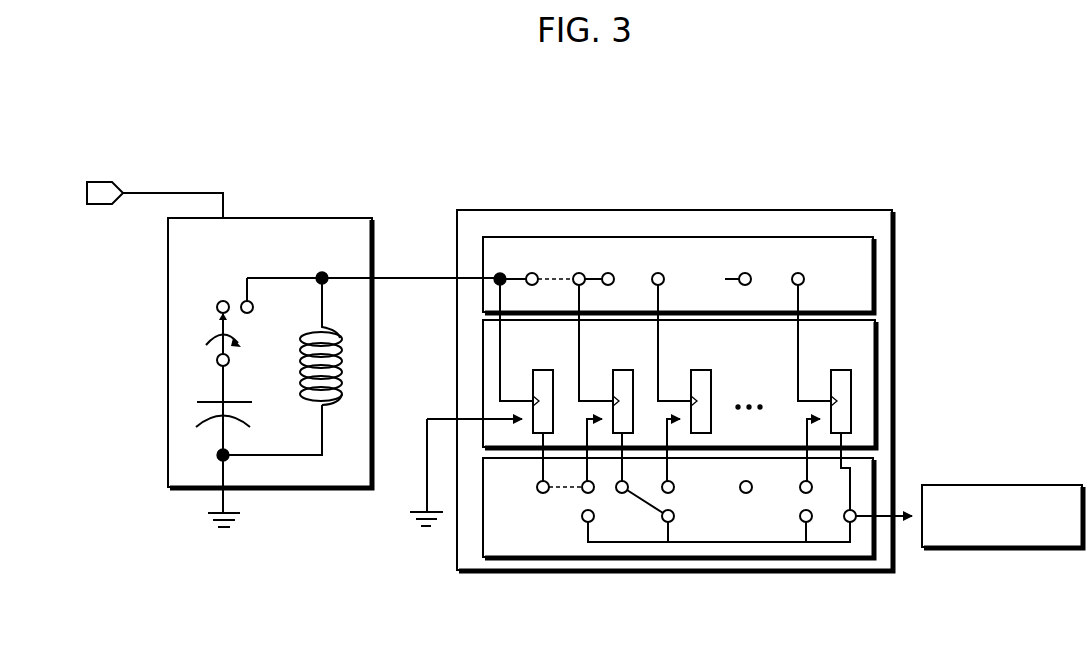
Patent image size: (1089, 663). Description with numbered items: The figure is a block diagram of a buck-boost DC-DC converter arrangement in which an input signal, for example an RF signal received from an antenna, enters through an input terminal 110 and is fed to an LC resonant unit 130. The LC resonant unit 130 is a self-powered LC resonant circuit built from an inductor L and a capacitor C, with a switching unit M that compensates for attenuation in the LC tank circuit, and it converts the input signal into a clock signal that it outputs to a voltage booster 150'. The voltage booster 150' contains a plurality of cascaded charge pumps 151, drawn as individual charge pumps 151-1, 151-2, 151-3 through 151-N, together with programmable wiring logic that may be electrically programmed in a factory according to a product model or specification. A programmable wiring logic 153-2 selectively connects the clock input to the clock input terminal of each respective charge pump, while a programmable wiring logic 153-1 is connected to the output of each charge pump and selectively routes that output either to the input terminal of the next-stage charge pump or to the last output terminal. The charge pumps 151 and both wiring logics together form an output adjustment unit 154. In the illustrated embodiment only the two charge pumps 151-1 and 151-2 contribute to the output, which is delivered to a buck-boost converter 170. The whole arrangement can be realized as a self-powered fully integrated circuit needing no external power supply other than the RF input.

The input terminal 110 is at (104, 182).
The LC resonant unit 130 is at (297, 218).
The switching unit M is at (232, 333).
The capacitor C is at (233, 418).
The inductor L is at (321, 355).
The voltage booster 150' is at (714, 377).
The programmable wiring logic 153-2 is at (873, 277).
The charge pumps 151 is at (712, 397).
The charge pump 151-1 is at (539, 369).
The charge pump 151-2 is at (621, 369).
The charge pump 151-3 is at (700, 369).
The charge pump 151-N is at (839, 369).
The programmable wiring logic 153-1 is at (873, 470).
The output adjustment unit 154 is at (967, 272).
The buck-boost converter 170 is at (1012, 485).